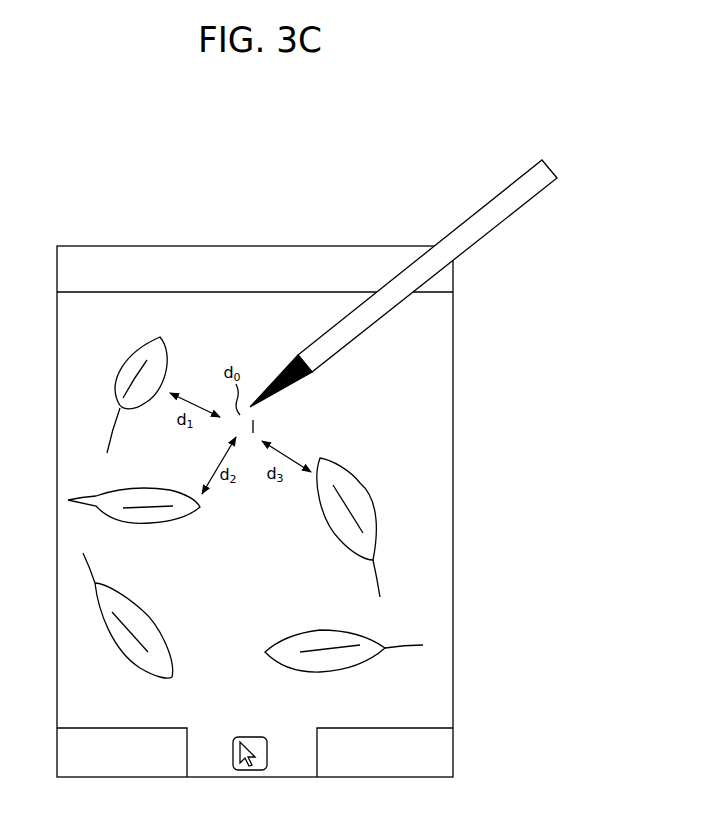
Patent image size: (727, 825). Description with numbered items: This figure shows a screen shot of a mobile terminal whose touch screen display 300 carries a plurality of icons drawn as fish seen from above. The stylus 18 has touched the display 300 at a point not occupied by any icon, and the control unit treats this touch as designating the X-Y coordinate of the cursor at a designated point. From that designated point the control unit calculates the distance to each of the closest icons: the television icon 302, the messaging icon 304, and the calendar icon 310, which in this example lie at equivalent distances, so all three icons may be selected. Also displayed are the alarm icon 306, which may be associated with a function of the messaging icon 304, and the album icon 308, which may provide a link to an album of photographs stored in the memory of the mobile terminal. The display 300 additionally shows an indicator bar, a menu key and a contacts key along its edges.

The stylus 18 is at (505, 207).
The touch screen display 300 is at (453, 425).
The icon 302 is at (132, 357).
The icon 304 is at (148, 523).
The icon 306 is at (165, 648).
The icon 308 is at (298, 668).
The icon 310 is at (373, 507).